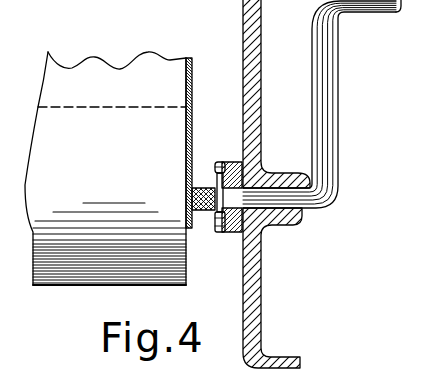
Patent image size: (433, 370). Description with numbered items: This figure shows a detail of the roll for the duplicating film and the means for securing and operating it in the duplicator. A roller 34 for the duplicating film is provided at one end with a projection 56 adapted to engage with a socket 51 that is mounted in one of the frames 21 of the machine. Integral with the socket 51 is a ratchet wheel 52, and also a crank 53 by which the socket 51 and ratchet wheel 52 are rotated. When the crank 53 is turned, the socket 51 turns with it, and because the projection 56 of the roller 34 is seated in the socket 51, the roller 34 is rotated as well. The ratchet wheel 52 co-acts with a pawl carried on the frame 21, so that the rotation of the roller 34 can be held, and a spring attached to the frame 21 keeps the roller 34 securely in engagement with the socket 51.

The frame 21 is at (261, 82).
The roller 34 is at (193, 157).
The socket 51 is at (211, 212).
The ratchet wheel 52 is at (237, 234).
The crank 53 is at (331, 98).
The projection 56 is at (197, 188).